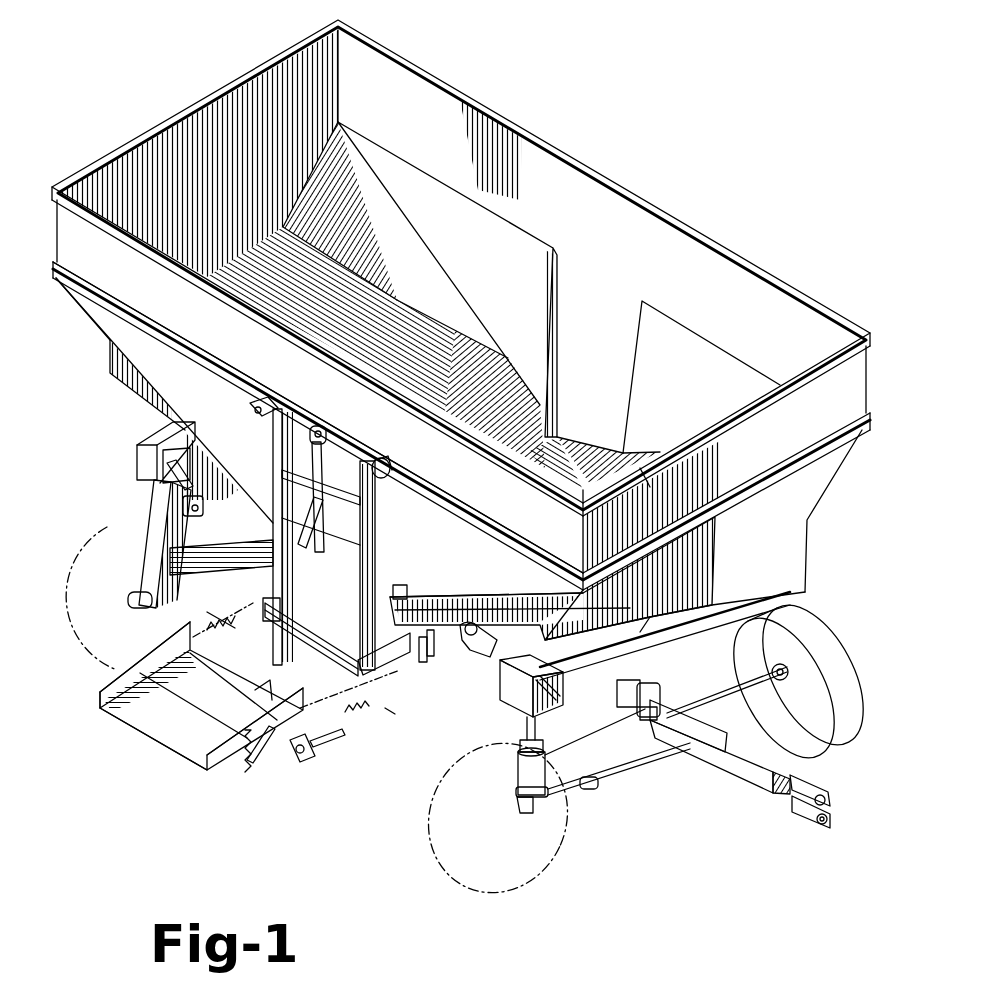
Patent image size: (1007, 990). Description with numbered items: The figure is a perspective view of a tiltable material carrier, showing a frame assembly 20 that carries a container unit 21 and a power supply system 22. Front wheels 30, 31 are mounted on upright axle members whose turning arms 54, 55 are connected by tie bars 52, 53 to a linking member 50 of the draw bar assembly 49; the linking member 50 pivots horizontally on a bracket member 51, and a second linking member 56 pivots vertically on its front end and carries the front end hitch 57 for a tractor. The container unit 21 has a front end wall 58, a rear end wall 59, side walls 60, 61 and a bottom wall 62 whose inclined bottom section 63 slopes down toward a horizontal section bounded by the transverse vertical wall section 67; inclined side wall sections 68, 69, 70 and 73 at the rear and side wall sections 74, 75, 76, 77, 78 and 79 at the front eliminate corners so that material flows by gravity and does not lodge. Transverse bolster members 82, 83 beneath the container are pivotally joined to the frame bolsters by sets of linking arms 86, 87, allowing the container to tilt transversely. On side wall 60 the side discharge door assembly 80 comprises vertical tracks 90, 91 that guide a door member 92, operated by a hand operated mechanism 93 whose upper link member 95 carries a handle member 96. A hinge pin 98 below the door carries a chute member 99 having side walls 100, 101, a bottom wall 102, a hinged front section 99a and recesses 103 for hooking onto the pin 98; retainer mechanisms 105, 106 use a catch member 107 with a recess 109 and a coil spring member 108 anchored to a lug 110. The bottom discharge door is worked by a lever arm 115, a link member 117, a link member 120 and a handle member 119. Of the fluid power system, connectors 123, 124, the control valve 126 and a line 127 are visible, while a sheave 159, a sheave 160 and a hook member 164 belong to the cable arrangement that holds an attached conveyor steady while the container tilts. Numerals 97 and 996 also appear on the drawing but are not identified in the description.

The frame assembly 20 is at (498, 715).
The container unit 21 is at (658, 197).
The power supply system 22 is at (464, 678).
The front wheel 30 is at (440, 862).
The front wheel 31 is at (815, 606).
The draw bar assembly 49 is at (740, 798).
The linking member 50 is at (670, 765).
The bracket member 51 is at (670, 700).
The tie bar 52 is at (610, 788).
The tie bar 53 is at (722, 724).
The turning arm 54 is at (575, 800).
The turning arm 55 is at (822, 632).
The linking member 56 is at (795, 785).
The front end hitch 57 is at (810, 832).
The front end wall 58 is at (795, 548).
The rear end wall 59 is at (293, 65).
The side wall 60 is at (182, 340).
The side wall 61 is at (524, 128).
The bottom wall 62 is at (560, 455).
The bottom section 63 is at (292, 322).
The transverse vertical wall section 67 is at (556, 420).
The side wall section 68 is at (507, 259).
The intermediate side wall section 69 is at (445, 307).
The side wall section 70 is at (475, 381).
The side wall section 73 is at (217, 415).
The side wall section 74 is at (702, 384).
The side wall section 75 is at (668, 470).
The side wall section 76 is at (650, 487).
The side wall section 77 is at (640, 632).
The side wall section 78 is at (520, 612).
The side wall section 79 is at (440, 560).
The side discharge door assembly 80 is at (276, 613).
The bolster member 82 is at (500, 688).
The bolster member 83 is at (137, 462).
The linking arms 86 is at (526, 722).
The linking arms 87 is at (170, 480).
The vertical track 90 is at (273, 530).
The vertical track 91 is at (376, 530).
The door member 92 is at (340, 642).
The hand operated mechanism 93 is at (336, 452).
The upper link member 95 is at (320, 480).
The handle member 96 is at (292, 556).
The spring pivot 97 is at (262, 600).
The hinge pin 98 is at (398, 690).
The chute member 99 is at (178, 772).
The front section 99a is at (110, 718).
The side wall 100 is at (100, 692).
The side wall 101 is at (222, 780).
The bottom wall 102 is at (150, 745).
The recess 103 is at (262, 765).
The retainer mechanism 105 is at (235, 640).
The retainer mechanism 106 is at (330, 742).
The catch member 107 is at (320, 765).
The coil spring member 108 is at (392, 712).
The recess 109 is at (318, 752).
The lug 110 is at (252, 780).
The lever arm 115 is at (420, 660).
The link member 117 is at (433, 655).
The handle member 119 is at (402, 588).
The link member 120 is at (420, 598).
The connector 123 is at (672, 650).
The connector 124 is at (648, 722).
The control valve 126 is at (620, 708).
The line 127 is at (480, 650).
The sheave 159 is at (278, 406).
The sheave 160 is at (204, 510).
The hook member 164 is at (392, 468).
The tray floor 996 is at (236, 689).